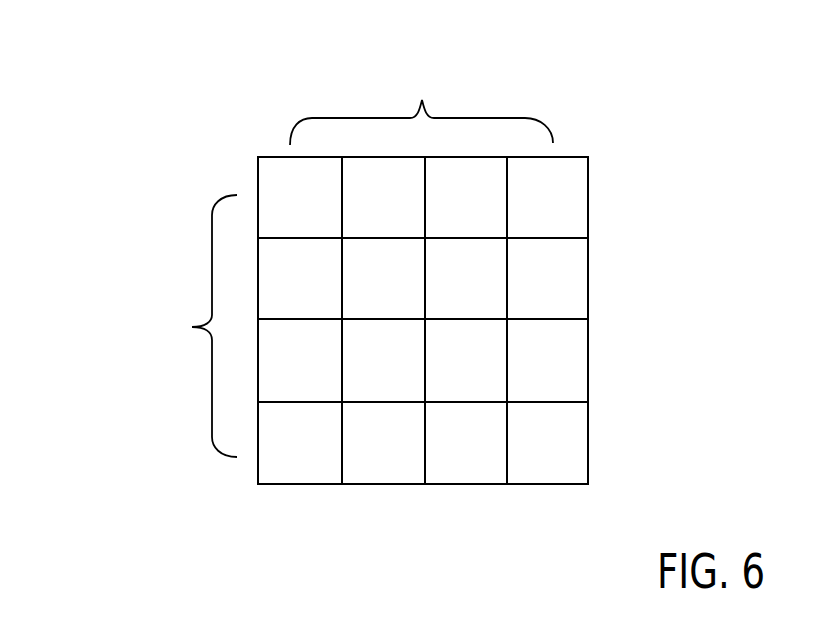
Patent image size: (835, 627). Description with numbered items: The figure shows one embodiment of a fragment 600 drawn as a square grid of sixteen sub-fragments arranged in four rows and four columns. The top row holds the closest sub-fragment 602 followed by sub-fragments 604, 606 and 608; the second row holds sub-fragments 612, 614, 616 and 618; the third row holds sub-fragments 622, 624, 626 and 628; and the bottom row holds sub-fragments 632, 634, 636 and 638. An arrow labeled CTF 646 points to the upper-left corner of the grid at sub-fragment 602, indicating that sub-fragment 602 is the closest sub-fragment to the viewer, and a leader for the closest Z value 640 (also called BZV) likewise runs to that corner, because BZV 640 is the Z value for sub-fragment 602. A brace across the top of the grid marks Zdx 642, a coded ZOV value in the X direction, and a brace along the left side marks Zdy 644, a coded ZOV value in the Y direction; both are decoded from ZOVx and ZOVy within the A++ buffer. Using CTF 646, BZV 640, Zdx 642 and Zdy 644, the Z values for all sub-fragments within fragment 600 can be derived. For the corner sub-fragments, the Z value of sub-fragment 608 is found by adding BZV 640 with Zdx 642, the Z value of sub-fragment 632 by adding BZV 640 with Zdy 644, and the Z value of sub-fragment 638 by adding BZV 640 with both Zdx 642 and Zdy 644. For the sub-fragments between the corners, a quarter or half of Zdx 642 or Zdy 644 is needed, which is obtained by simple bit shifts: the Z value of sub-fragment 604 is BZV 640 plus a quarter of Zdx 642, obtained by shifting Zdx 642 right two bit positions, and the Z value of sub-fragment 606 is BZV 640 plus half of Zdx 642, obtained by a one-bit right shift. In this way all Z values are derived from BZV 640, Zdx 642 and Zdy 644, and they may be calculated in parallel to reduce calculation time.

The fragment 600 is at (58, 57).
The closest sub-fragment 602 is at (300, 197).
The sub-fragment 604 is at (383, 197).
The sub-fragment 606 is at (466, 197).
The sub-fragment 608 is at (547, 197).
The sub-fragment 612 is at (300, 278).
The sub-fragment 614 is at (383, 278).
The sub-fragment 616 is at (466, 278).
The sub-fragment 618 is at (547, 278).
The sub-fragment 622 is at (300, 360).
The sub-fragment 624 is at (383, 360).
The sub-fragment 626 is at (466, 360).
The sub-fragment 628 is at (547, 360).
The sub-fragment 632 is at (300, 443).
The sub-fragment 634 is at (383, 443).
The sub-fragment 636 is at (466, 443).
The sub-fragment 638 is at (547, 443).
The closest Z value 640 is at (257, 159).
The Zdx 642 is at (421, 91).
The Zdy 644 is at (186, 326).
The CTF 646 is at (275, 143).